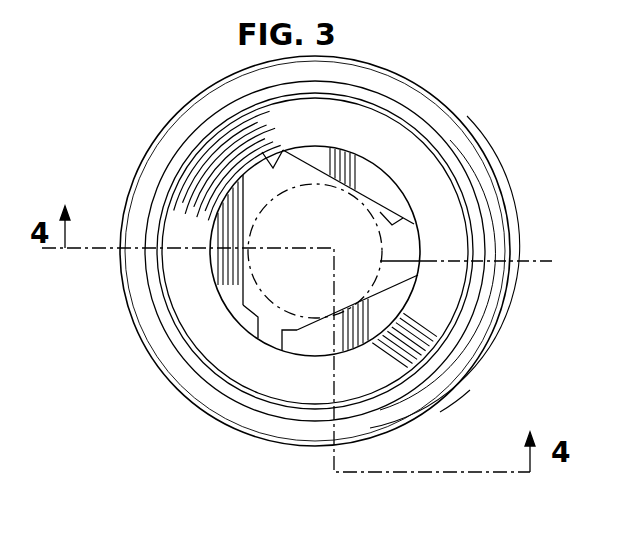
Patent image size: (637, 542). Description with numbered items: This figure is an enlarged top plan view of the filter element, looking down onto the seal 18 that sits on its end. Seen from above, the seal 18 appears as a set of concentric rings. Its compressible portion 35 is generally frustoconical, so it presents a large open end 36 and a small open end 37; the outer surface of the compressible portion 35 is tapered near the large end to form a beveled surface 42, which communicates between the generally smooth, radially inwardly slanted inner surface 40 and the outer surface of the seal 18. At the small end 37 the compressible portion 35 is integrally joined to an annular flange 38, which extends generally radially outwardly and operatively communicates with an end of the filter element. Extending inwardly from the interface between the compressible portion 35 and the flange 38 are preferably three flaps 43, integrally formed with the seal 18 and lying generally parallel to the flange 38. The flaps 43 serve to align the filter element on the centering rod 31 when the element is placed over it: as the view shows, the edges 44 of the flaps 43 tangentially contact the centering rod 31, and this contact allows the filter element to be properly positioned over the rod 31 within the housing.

The seal 18 is at (498, 152).
The centering rod 31 is at (481, 267).
The compressible portion 35 is at (455, 242).
The large open end 36 is at (215, 128).
The small open end 37 is at (273, 167).
The annular flange 38 is at (476, 345).
The inner surface 40 is at (190, 290).
The beveled surface 42 is at (172, 173).
The flaps 43 is at (230, 252).
The edges 44 is at (282, 331).